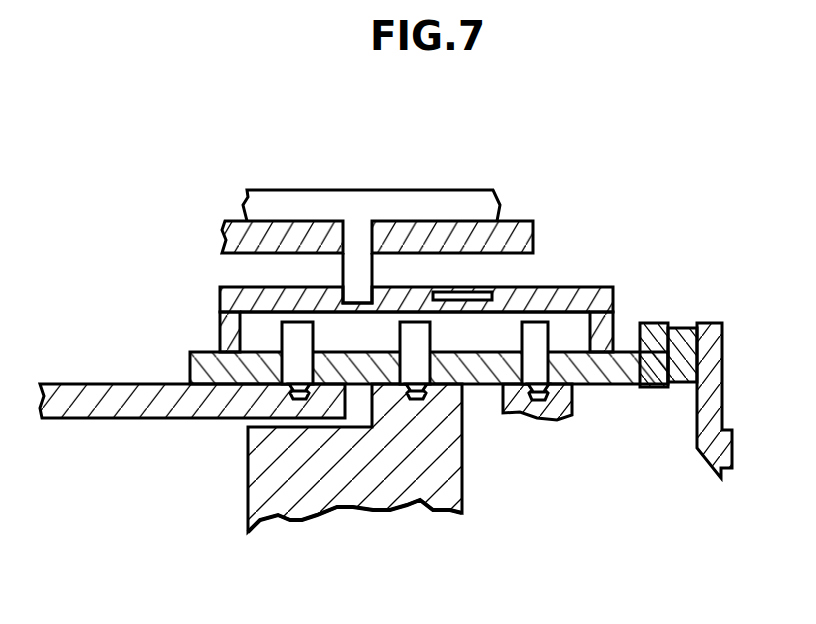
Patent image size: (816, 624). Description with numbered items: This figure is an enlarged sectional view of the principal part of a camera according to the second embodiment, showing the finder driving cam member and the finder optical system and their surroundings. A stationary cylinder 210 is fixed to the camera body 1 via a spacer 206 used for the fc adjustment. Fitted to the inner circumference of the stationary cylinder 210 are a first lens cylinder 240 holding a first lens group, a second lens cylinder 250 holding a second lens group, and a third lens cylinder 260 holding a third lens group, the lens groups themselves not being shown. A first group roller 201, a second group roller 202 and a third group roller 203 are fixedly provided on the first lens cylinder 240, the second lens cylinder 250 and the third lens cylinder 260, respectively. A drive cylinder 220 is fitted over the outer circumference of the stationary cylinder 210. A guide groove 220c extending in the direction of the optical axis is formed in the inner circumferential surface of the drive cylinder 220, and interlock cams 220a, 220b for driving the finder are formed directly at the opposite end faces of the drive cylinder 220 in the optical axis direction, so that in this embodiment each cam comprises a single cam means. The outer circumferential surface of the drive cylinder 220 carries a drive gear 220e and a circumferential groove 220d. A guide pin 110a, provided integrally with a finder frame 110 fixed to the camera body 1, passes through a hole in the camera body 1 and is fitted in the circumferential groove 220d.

The camera body 1 is at (513, 243).
The finder frame 110 is at (470, 200).
The guide pin 110a is at (350, 265).
The first group roller 201 is at (293, 365).
The second group roller 202 is at (425, 362).
The third group roller 203 is at (545, 363).
The spacer 206 is at (679, 360).
The stationary cylinder 210 is at (648, 350).
The drive cylinder 220 is at (228, 302).
The interlock cam 220a is at (230, 343).
The interlock cam 220b is at (608, 305).
The guide groove 220c is at (477, 337).
The circumferential groove 220d is at (358, 297).
The drive gear 220e is at (472, 293).
The first lens cylinder 240 is at (90, 400).
The second lens cylinder 250 is at (343, 483).
The third lens cylinder 260 is at (556, 408).